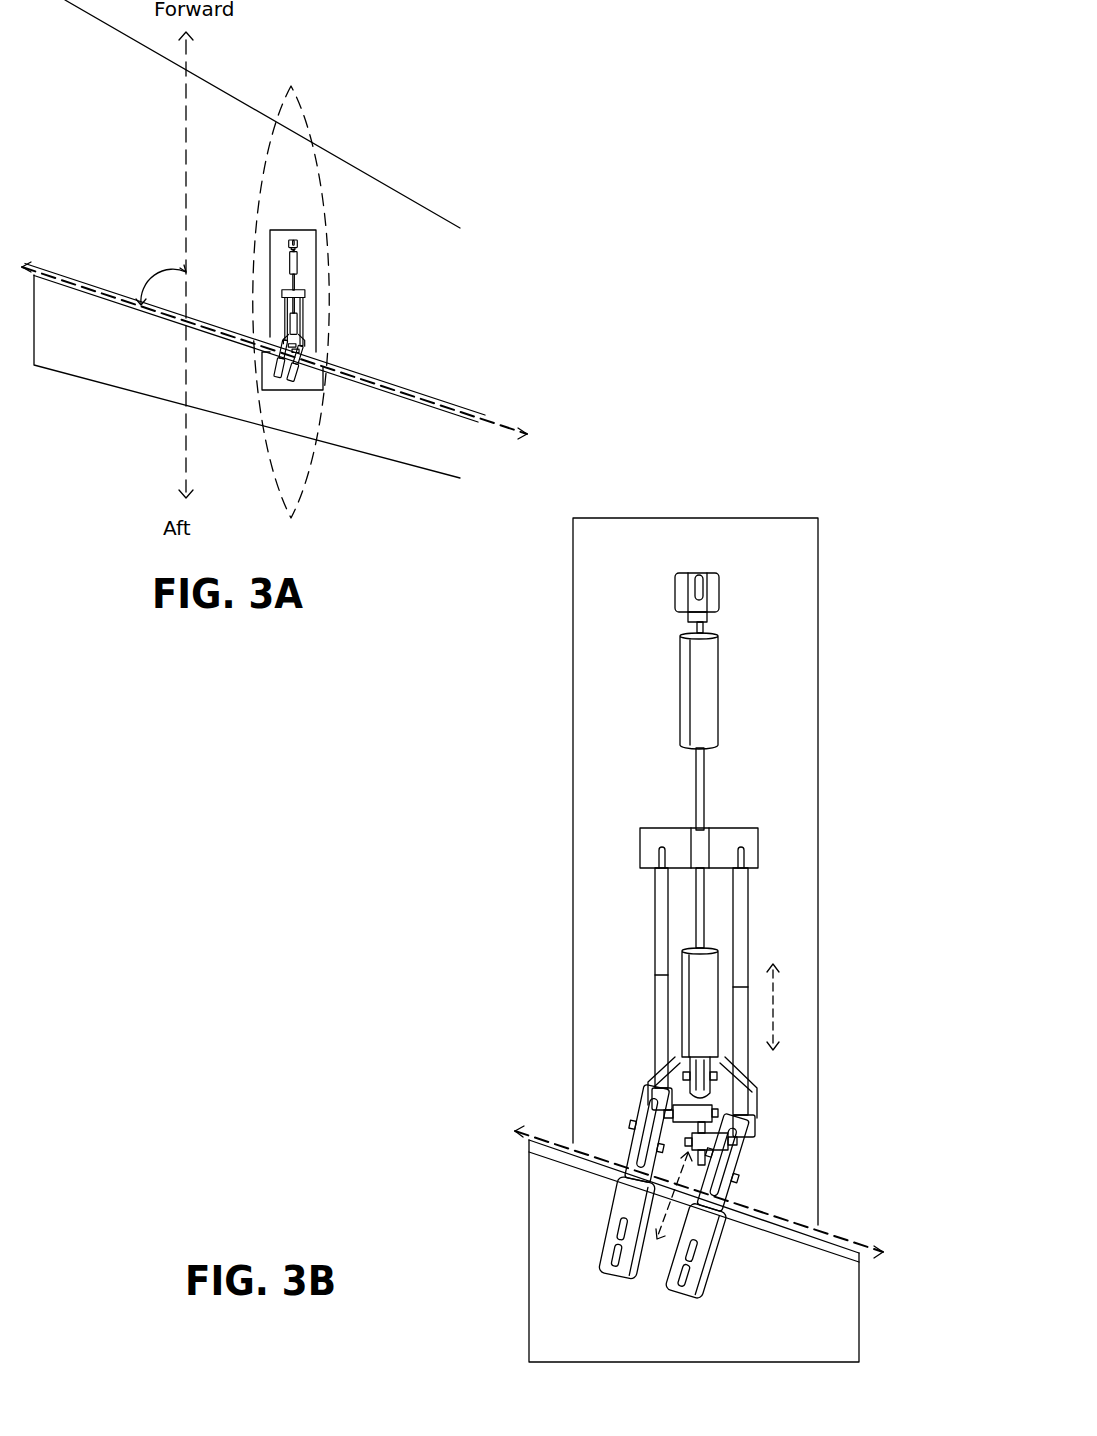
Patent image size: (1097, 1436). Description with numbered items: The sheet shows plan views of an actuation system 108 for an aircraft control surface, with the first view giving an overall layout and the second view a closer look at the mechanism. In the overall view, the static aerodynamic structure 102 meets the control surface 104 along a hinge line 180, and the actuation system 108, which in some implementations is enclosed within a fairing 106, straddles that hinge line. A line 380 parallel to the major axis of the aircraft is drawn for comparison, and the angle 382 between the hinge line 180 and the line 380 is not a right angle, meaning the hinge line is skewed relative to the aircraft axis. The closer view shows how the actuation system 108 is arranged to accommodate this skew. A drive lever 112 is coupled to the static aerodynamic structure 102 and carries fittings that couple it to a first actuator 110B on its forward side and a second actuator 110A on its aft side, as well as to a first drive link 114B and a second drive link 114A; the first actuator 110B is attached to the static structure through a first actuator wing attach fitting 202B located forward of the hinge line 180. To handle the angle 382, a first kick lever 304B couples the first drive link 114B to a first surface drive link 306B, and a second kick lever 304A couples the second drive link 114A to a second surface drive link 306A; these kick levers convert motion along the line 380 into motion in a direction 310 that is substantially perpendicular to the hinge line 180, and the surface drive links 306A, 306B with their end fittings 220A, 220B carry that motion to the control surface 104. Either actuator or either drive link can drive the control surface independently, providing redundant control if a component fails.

In FIG. 3A, the static aerodynamic structure 102 is at (402, 193).
In FIG. 3B, the static aerodynamic structure 102 is at (573, 700).
In FIG. 3A, the control surface 104 is at (140, 393).
In FIG. 3B, the control surface 104 is at (531, 1266).
In FIG. 3A, the fairing 106 is at (311, 114).
In FIG. 3A, the actuation system 108 is at (327, 291).
In FIG. 3B, the second actuator 110A is at (695, 1005).
In FIG. 3B, the first actuator 110B is at (712, 668).
In FIG. 3B, the drive lever 112 is at (660, 830).
In FIG. 3B, the second drive link 114A is at (747, 932).
In FIG. 3B, the first drive link 114B is at (657, 905).
In FIG. 3A, the hinge line 180 is at (157, 313).
In FIG. 3B, the hinge line 180 is at (822, 1232).
In FIG. 3B, the first actuator wing attach fitting 202B is at (716, 578).
In FIG. 3B, the gripper pad 220A is at (699, 1303).
In FIG. 3B, the gripper pad 220B is at (632, 1280).
In FIG. 3B, the second kick lever 304A is at (750, 1140).
In FIG. 3B, the first kick lever 304B is at (672, 1103).
In FIG. 3B, the second surface drive link 306A is at (727, 1207).
In FIG. 3B, the first surface drive link 306B is at (633, 1188).
In FIG. 3B, the direction 310 is at (640, 1180).
In FIG. 3A, the line 380 is at (185, 177).
In FIG. 3B, the line 380 is at (775, 1013).
In FIG. 3A, the angle 382 is at (159, 267).